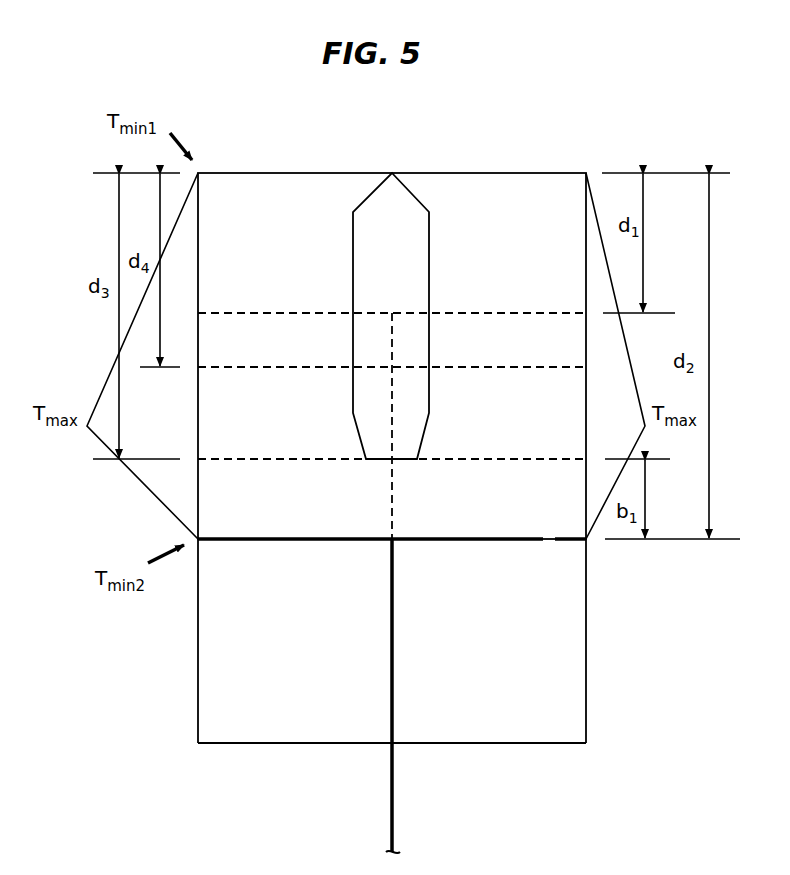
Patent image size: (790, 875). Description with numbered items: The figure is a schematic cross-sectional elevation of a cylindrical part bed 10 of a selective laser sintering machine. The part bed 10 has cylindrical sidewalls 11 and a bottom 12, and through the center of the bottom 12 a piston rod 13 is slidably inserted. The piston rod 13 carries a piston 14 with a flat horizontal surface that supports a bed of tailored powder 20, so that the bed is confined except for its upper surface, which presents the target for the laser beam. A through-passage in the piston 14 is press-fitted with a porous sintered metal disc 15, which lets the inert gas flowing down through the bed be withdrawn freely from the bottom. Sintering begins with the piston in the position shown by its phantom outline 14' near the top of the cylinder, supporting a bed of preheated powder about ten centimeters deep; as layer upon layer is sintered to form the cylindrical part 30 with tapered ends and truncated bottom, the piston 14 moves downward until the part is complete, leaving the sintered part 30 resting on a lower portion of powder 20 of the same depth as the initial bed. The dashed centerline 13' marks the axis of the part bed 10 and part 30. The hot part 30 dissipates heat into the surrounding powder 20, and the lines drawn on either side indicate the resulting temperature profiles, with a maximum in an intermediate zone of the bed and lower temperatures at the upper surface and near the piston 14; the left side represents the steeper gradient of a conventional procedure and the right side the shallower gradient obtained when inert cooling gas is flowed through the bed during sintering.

The cylindrical part bed 10 is at (150, 513).
The cylindrical sidewalls 11 is at (198, 618).
The bottom 12 is at (513, 743).
The piston rod 13 is at (422, 696).
The center line of cutting edge 13' is at (435, 426).
The piston 14 is at (370, 582).
The phantom outline of piston 14' is at (392, 285).
The porous sintered metal disc 15 is at (553, 539).
The bed of TOD powder 20 is at (294, 415).
The cylindrical part 30 is at (431, 213).